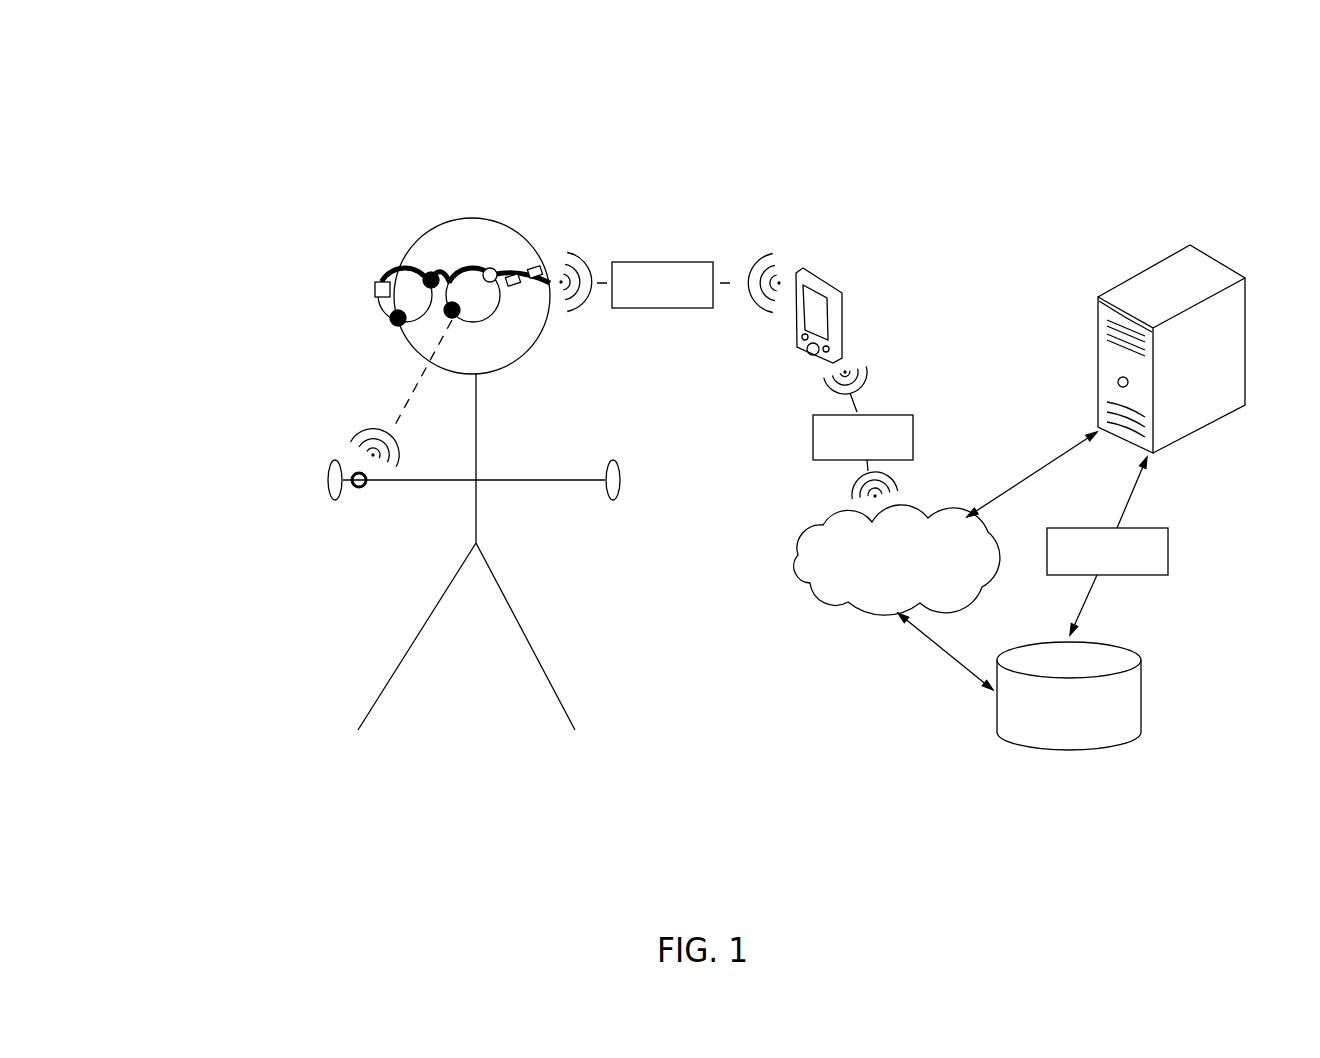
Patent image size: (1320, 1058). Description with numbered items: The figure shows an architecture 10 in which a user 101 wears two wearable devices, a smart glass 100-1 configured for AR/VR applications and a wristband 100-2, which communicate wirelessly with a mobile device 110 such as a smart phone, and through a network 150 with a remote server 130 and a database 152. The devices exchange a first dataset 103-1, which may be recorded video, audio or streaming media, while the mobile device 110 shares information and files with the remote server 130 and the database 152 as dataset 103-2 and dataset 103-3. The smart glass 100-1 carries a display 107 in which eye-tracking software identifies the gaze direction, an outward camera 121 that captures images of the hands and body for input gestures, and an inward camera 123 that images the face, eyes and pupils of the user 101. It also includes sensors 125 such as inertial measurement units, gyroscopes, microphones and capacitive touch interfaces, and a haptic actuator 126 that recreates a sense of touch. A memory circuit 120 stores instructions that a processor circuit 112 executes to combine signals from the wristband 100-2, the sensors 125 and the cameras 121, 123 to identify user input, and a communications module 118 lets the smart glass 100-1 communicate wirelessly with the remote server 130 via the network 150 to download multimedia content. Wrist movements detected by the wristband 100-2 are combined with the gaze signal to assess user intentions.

The architecture 10 is at (275, 103).
The smart glass 100-1 is at (495, 282).
The wristband 100-2 is at (358, 490).
The user 101 is at (427, 617).
The dataset 103-1 is at (697, 299).
The dataset 103-2 is at (898, 452).
The dataset 103-3 is at (1143, 567).
The display 107 is at (413, 301).
The mobile device 110 is at (843, 293).
The processor circuit 112 is at (513, 272).
The communications module 118 is at (375, 287).
The memory circuit 120 is at (538, 264).
The outward camera 121 is at (477, 300).
The inward camera 123 is at (430, 273).
The sensors 125 is at (397, 318).
The haptic actuator 126 is at (452, 318).
The remote server 130 is at (1220, 372).
The network 150 is at (920, 592).
The database 152 is at (1092, 672).